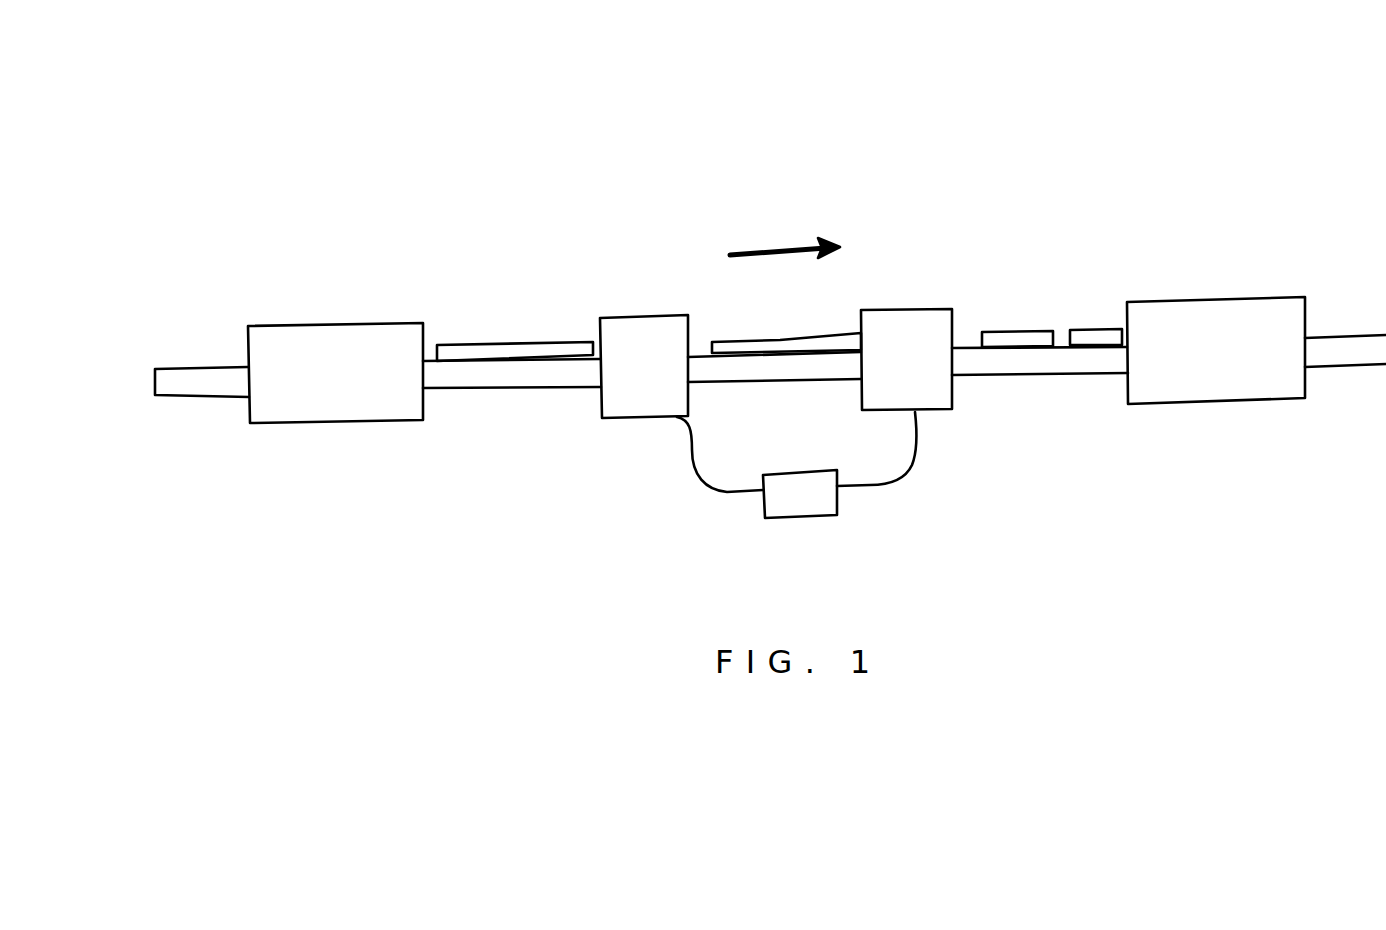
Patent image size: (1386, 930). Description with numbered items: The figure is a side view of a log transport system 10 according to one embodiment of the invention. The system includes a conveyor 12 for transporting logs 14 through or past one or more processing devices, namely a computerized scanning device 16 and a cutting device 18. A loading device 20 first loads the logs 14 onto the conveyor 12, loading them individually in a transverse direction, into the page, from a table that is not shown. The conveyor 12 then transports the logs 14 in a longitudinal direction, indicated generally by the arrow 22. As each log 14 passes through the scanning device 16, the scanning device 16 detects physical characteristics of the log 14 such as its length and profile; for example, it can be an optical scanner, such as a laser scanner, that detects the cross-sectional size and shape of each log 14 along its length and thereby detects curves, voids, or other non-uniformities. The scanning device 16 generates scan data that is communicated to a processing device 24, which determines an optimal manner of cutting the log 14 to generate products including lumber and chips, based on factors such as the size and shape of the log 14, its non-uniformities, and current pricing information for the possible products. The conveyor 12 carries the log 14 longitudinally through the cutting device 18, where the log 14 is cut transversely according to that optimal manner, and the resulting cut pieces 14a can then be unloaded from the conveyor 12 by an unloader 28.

The log transport system 10 is at (1178, 143).
The conveyor 12 is at (178, 395).
The logs 14 is at (500, 342).
The cut pieces 14a is at (1007, 328).
The scanning device 16 is at (622, 418).
The cutting device 18 is at (955, 398).
The loading device 20 is at (302, 325).
The longitudinal direction 22 is at (760, 250).
The processing device 24 is at (807, 518).
The unloader 28 is at (1225, 403).